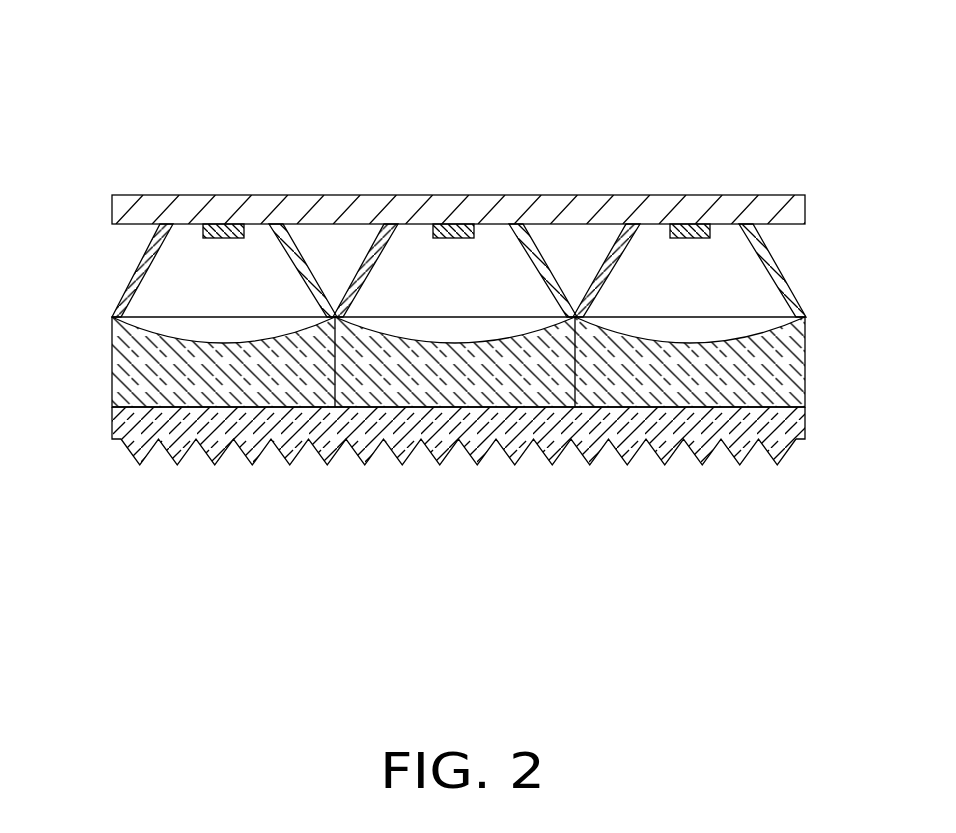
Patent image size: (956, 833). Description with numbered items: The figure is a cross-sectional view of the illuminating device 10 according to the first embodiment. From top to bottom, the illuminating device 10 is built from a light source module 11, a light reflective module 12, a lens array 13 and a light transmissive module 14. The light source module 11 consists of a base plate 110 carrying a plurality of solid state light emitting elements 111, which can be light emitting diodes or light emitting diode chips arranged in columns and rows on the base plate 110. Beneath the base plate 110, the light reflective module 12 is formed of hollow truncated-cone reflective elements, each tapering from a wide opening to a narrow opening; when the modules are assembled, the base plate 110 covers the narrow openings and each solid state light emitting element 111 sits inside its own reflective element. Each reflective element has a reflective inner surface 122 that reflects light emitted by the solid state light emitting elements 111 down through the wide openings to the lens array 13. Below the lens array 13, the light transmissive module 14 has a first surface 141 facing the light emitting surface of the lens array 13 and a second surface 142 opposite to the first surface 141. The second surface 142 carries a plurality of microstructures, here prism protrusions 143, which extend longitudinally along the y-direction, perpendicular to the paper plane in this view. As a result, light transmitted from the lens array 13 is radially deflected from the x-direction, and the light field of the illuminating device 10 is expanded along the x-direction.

The illuminating device 10 is at (442, 62).
The light source module 11 is at (825, 134).
The base plate 110 is at (773, 208).
The solid state light emitting elements 111 is at (690, 228).
The light reflective module 12 is at (770, 278).
The reflective inner surface 122 is at (614, 288).
The lens array 13 is at (780, 374).
The light transmissive module 14 is at (786, 444).
The first surface 141 is at (153, 414).
The second surface 142 is at (113, 444).
The prism protrusions 143 is at (703, 452).